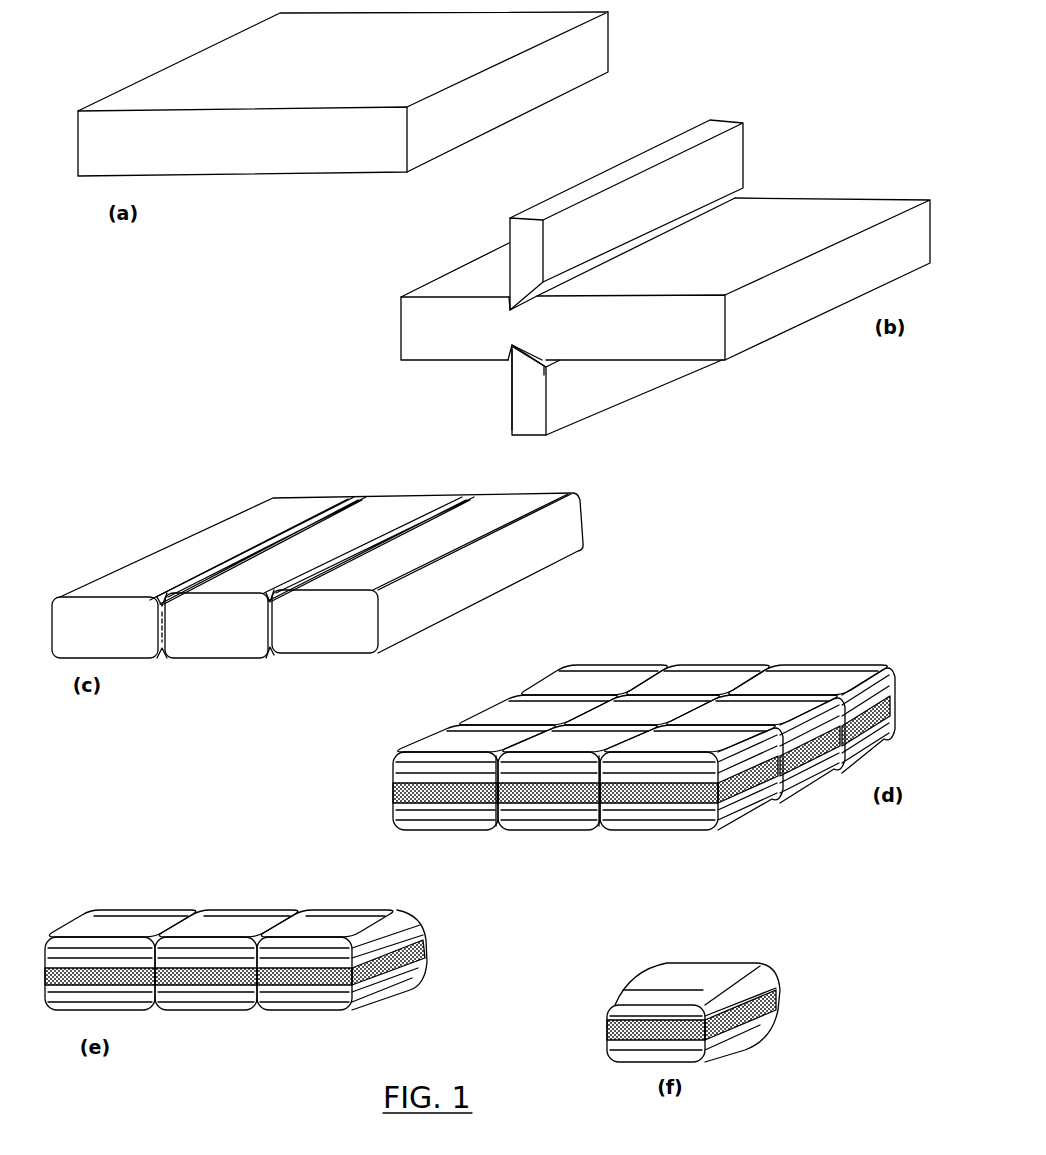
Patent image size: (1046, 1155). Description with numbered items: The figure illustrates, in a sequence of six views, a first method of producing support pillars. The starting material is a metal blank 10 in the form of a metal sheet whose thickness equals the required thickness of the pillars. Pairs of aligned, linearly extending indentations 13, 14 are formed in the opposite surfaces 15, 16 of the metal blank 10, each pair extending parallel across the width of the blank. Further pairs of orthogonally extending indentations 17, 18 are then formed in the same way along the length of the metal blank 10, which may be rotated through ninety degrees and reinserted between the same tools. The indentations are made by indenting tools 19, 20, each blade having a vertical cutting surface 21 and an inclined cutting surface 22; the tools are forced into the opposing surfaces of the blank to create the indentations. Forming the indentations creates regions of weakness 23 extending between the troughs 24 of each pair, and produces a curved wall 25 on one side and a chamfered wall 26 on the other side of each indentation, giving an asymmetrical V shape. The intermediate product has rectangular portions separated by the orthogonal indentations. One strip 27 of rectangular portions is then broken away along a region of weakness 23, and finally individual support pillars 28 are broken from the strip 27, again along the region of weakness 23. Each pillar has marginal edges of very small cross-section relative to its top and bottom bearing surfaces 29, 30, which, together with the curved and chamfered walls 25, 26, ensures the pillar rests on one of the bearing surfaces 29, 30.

The metal blank 10 is at (490, 102).
The indentations 13 is at (365, 498).
The indentations 14 is at (165, 650).
The surface 15 is at (475, 282).
The surface 16 is at (440, 343).
The orthogonally extending indentations 17 is at (527, 690).
The orthogonally extending indentations 18 is at (840, 762).
The indenting tool 19 is at (593, 183).
The indenting tool 20 is at (620, 373).
The vertical cutting surface 21 is at (512, 393).
The inclined cutting surface 22 is at (528, 363).
The region of weakness 23 is at (152, 628).
The troughs 24 is at (270, 612).
The curved wall 25 is at (287, 530).
The chamfered wall 26 is at (173, 602).
The strip 27 is at (225, 900).
The support pillar 28 is at (690, 958).
The top bearing surface 29 is at (710, 973).
The bottom bearing surface 30 is at (717, 1060).